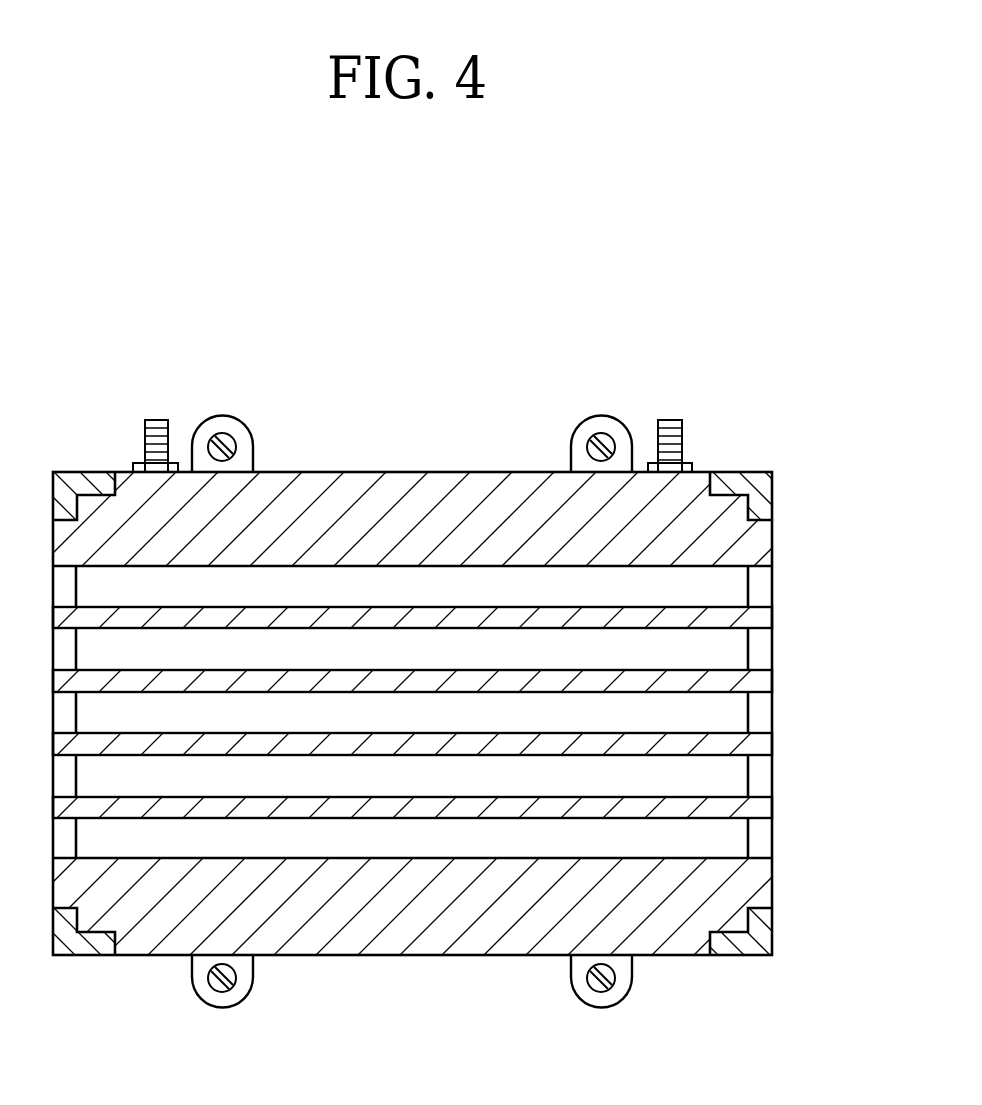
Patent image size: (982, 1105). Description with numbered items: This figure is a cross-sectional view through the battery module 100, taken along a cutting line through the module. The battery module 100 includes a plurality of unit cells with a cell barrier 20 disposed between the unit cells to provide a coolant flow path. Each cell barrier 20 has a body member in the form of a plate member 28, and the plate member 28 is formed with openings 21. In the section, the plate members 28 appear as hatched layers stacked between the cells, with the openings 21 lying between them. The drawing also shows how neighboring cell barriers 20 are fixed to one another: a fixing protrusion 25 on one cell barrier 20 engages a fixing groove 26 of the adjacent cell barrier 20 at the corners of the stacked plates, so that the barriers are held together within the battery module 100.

The battery module 100 is at (433, 349).
The cell barrier 20 is at (788, 653).
The opening 21 is at (728, 712).
The fixing protrusion 25 is at (772, 955).
The fixing groove 26 is at (694, 955).
The plate member 28 is at (702, 530).